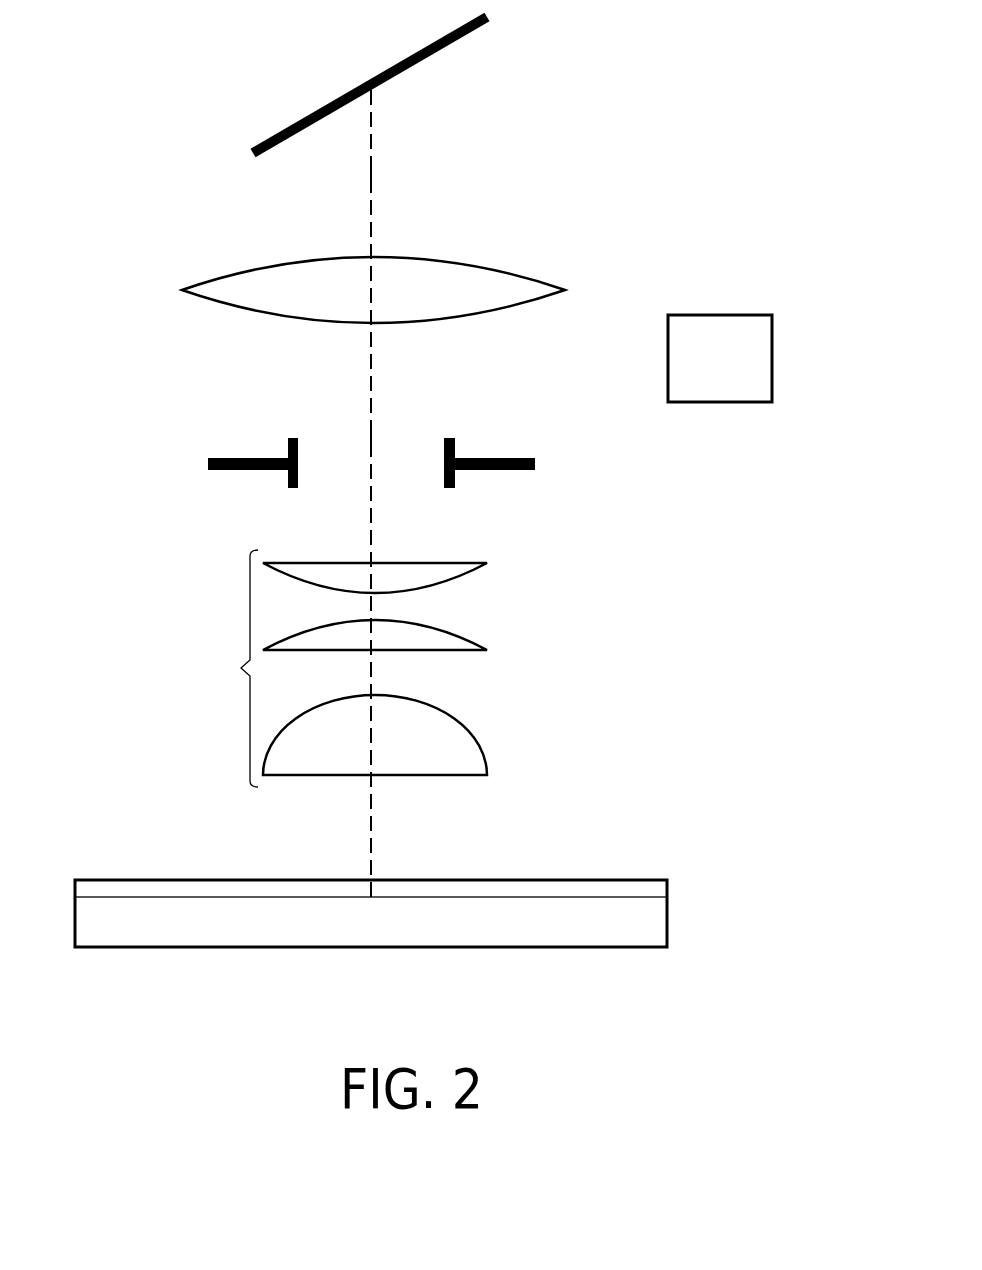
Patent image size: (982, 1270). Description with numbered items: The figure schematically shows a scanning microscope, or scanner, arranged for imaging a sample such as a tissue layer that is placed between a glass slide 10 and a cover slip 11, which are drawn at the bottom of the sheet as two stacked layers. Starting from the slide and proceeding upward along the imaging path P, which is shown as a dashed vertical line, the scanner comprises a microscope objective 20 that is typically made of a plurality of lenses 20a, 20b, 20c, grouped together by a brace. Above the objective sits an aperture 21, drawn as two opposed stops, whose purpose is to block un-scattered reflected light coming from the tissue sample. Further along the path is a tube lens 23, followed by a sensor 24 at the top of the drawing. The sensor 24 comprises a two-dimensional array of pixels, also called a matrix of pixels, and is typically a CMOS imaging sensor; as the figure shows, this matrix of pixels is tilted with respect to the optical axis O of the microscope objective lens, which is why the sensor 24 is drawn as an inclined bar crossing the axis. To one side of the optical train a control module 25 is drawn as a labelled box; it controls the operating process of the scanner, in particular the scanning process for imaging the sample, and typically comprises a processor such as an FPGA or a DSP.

The glass slide 10 is at (650, 925).
The cover slip 11 is at (650, 887).
The microscope objective 20 is at (384, 668).
The lens 20a is at (483, 570).
The lens 20b is at (477, 643).
The lens 20c is at (475, 760).
The aperture 21 is at (305, 495).
The tube lens 23 is at (210, 285).
The sensor 24 is at (252, 150).
The control module 25 is at (768, 323).
The optical axis O is at (371, 440).
The imaging path P is at (372, 175).